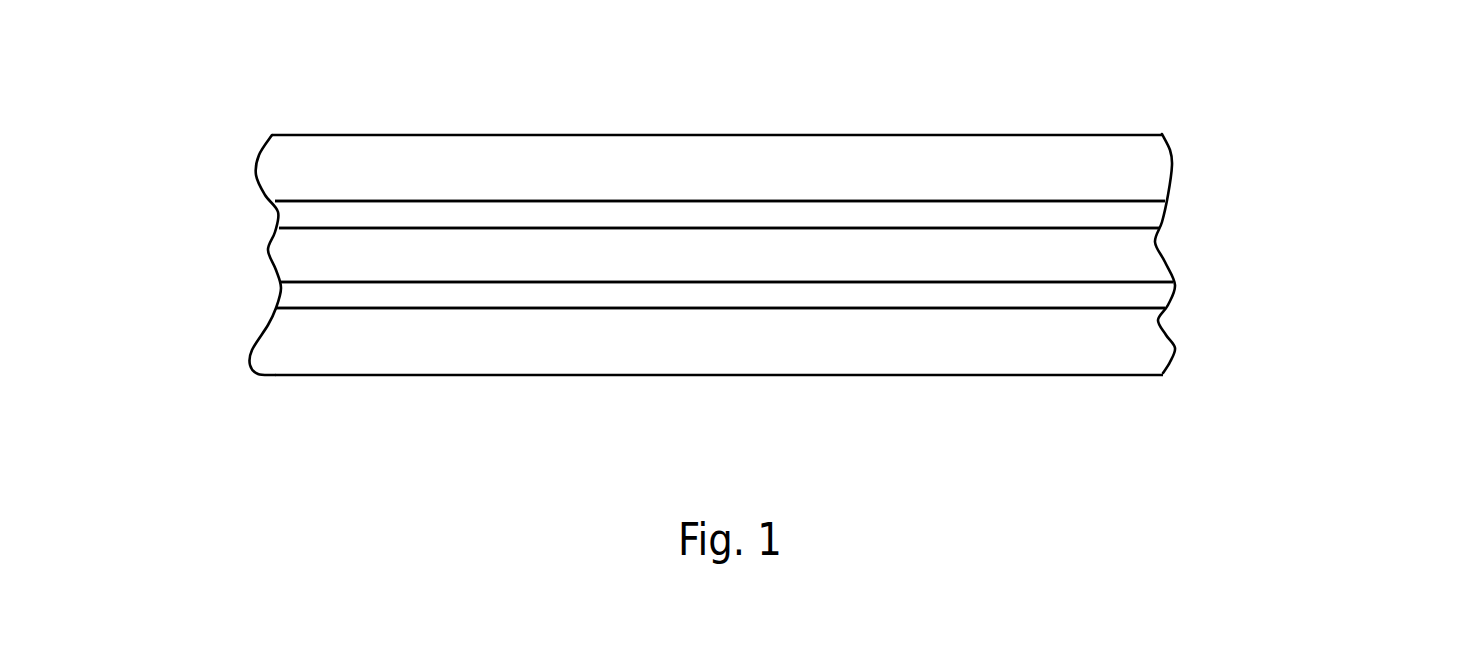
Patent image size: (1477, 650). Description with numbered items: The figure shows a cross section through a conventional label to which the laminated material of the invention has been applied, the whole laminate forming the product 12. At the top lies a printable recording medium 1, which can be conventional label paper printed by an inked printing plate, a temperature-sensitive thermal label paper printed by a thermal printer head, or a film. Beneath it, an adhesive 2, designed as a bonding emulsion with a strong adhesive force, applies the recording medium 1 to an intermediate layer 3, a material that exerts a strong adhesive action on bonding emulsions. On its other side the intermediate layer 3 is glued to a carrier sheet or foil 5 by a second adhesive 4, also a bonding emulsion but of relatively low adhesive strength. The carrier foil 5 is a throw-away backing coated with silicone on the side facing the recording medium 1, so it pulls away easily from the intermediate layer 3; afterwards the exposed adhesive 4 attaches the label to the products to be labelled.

The printable recording medium 1 is at (1135, 177).
The adhesive 2 is at (1138, 222).
The intermediate layer 3 is at (315, 255).
The second adhesive 4 is at (1149, 293).
The carrier sheet or foil 5 is at (1143, 354).
The product 12 is at (1337, 40).